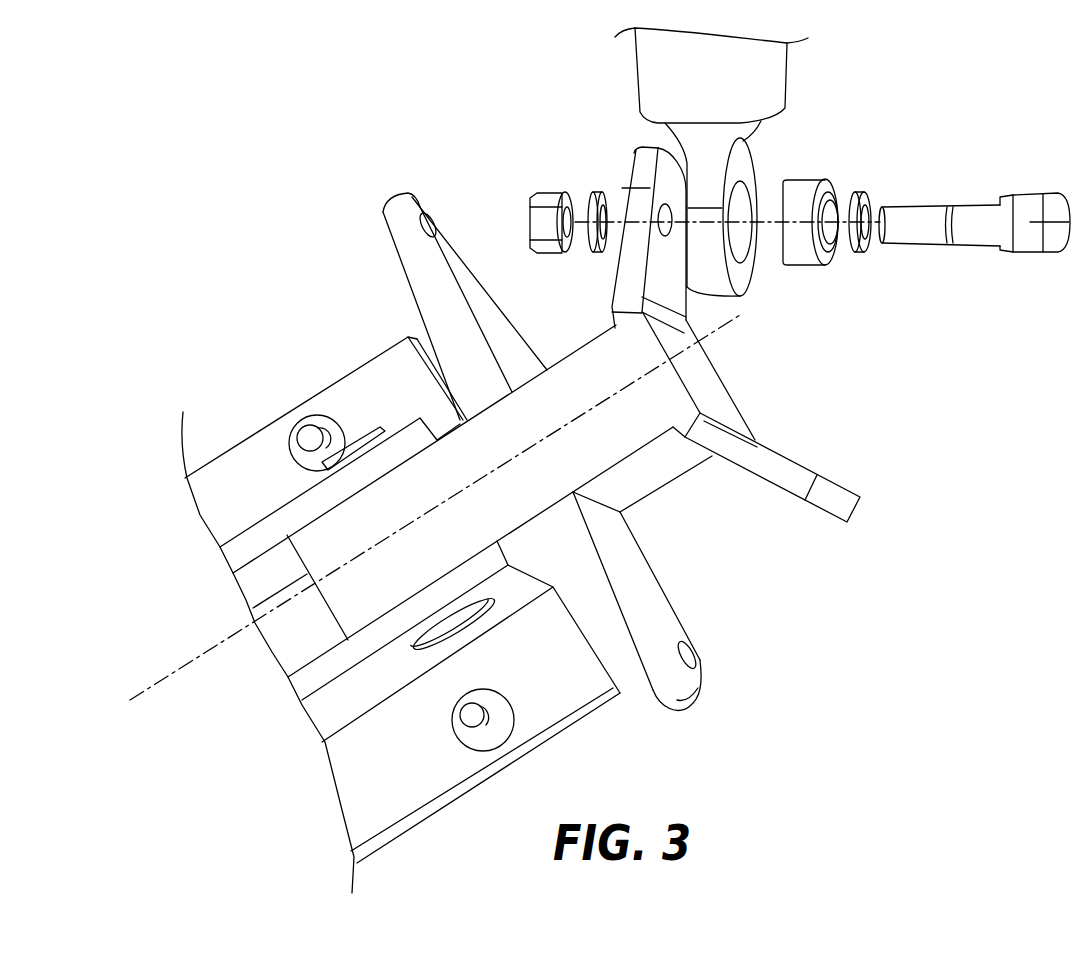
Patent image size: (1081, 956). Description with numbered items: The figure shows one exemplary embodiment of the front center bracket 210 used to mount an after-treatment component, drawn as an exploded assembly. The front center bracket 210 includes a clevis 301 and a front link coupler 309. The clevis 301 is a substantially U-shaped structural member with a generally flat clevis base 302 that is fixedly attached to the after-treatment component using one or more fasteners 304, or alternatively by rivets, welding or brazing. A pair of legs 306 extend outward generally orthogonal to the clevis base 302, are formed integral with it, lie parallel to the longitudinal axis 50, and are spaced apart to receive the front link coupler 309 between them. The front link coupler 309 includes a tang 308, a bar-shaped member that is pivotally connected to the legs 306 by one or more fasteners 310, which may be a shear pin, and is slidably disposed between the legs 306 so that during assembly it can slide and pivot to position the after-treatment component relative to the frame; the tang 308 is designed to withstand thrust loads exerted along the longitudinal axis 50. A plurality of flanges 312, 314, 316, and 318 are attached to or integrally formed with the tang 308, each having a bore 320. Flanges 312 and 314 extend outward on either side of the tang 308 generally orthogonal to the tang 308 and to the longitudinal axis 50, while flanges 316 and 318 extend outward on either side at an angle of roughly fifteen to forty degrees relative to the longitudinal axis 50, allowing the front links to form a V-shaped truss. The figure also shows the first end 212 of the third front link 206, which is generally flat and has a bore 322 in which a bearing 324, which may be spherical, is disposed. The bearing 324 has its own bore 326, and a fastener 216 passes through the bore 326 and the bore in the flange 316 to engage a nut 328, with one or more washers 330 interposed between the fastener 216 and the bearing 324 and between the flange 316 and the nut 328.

The longitudinal axis 50 is at (143, 695).
The third front link 206 is at (768, 83).
The front center bracket 210 is at (219, 141).
The first end 212 is at (740, 149).
The fastener 216 is at (965, 208).
The clevis 301 is at (218, 451).
The clevis base 302 is at (240, 455).
The fasteners 304 is at (305, 433).
The legs 306 is at (233, 550).
The tang 308 is at (600, 444).
The front link coupler 309 is at (739, 382).
The fasteners 310 is at (365, 443).
The flange 312 is at (395, 212).
The flange 314 is at (681, 713).
The flange 316 is at (640, 153).
The flange 318 is at (843, 511).
The bore 320 is at (424, 218).
The bore 322 is at (742, 199).
The bearing 324 is at (793, 264).
The bore 326 is at (833, 204).
The nut 328 is at (544, 212).
The washers 330 is at (598, 253).